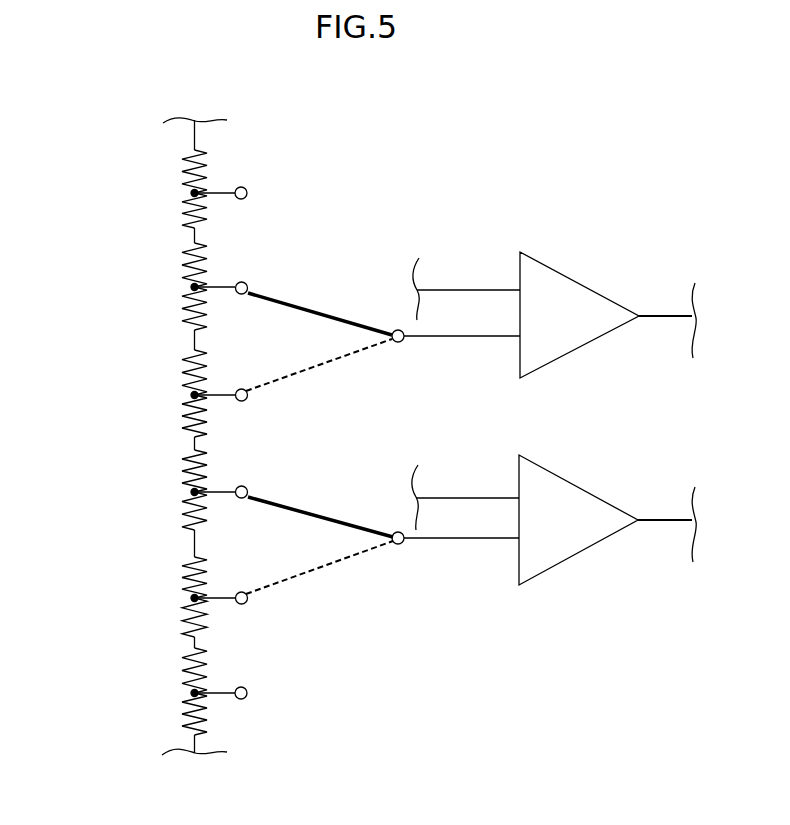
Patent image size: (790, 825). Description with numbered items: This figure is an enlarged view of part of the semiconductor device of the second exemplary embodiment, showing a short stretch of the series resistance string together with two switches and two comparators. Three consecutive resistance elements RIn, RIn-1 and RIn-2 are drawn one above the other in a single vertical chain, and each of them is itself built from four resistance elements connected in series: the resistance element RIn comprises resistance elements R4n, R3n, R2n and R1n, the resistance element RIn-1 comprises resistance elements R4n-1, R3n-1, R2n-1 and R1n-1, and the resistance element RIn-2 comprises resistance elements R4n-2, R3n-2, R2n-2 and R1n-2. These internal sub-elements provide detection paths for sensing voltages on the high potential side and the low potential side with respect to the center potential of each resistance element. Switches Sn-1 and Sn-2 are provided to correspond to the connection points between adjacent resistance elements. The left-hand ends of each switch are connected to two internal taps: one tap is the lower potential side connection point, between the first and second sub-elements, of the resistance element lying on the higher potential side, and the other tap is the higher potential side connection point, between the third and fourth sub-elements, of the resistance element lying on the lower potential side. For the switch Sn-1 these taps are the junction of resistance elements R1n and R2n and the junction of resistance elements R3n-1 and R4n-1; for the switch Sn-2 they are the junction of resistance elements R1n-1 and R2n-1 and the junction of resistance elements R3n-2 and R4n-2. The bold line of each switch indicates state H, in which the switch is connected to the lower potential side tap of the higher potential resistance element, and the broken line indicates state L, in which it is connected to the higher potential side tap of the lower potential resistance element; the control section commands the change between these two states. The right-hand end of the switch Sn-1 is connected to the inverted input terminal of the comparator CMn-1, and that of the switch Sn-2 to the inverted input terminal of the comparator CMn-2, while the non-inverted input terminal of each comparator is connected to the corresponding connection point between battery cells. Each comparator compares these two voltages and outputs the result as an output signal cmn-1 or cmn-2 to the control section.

The resistance element RIn is at (175, 157).
The resistance element R4n is at (183, 165).
The resistance element R3n is at (183, 212).
The resistance element R2n is at (183, 255).
The resistance element R1n is at (183, 308).
The resistance element RIn-1 is at (173, 353).
The resistance element R4n-1 is at (183, 367).
The resistance element R3n-1 is at (183, 415).
The resistance element R2n-1 is at (183, 456).
The resistance element R1n-1 is at (183, 511).
The resistance element RIn-2 is at (175, 557).
The resistance element R4n-2 is at (183, 570).
The resistance element R3n-2 is at (183, 619).
The resistance element R2n-2 is at (183, 660).
The resistance element R1n-2 is at (183, 716).
The switch Sn-1 is at (320, 302).
The switch Sn-2 is at (320, 507).
The state H is at (325, 320).
The state L is at (318, 360).
The comparator CMn-1 is at (551, 265).
The comparator CMn-2 is at (551, 470).
The output signal cmn-1 is at (664, 320).
The output signal cmn-2 is at (663, 524).